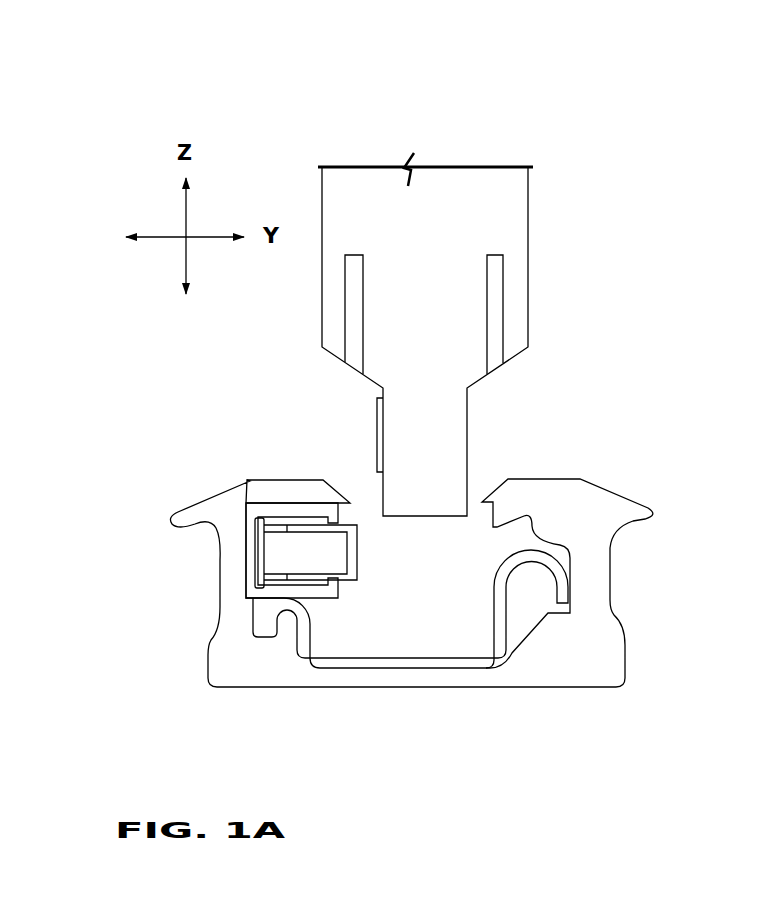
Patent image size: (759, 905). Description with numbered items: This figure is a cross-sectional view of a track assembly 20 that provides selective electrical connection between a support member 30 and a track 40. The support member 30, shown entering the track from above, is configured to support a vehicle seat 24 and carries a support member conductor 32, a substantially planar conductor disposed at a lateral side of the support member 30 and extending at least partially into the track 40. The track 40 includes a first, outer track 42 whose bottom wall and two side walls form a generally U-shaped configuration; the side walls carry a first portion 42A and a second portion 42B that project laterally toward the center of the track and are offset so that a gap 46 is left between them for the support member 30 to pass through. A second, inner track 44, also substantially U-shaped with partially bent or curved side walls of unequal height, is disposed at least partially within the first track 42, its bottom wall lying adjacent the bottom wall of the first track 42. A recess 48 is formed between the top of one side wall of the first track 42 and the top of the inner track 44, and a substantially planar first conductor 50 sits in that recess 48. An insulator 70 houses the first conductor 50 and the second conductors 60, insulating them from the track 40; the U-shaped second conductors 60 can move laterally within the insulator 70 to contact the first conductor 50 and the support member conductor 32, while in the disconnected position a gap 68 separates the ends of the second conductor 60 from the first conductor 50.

The track assembly 20 is at (535, 115).
The vehicle seat 24 is at (377, 165).
The support member 30 is at (436, 308).
The support member conductor 32 is at (371, 403).
The track 40 is at (410, 586).
The first track 42 is at (410, 580).
The first portion 42A is at (237, 547).
The second portion 42B is at (528, 500).
The second track 44 is at (410, 654).
The gap 46 is at (452, 536).
The recess 48 is at (247, 518).
The first conductor 50 is at (260, 547).
The second conductor 60 is at (350, 513).
The gap 68 is at (248, 573).
The insulator 70 is at (262, 510).